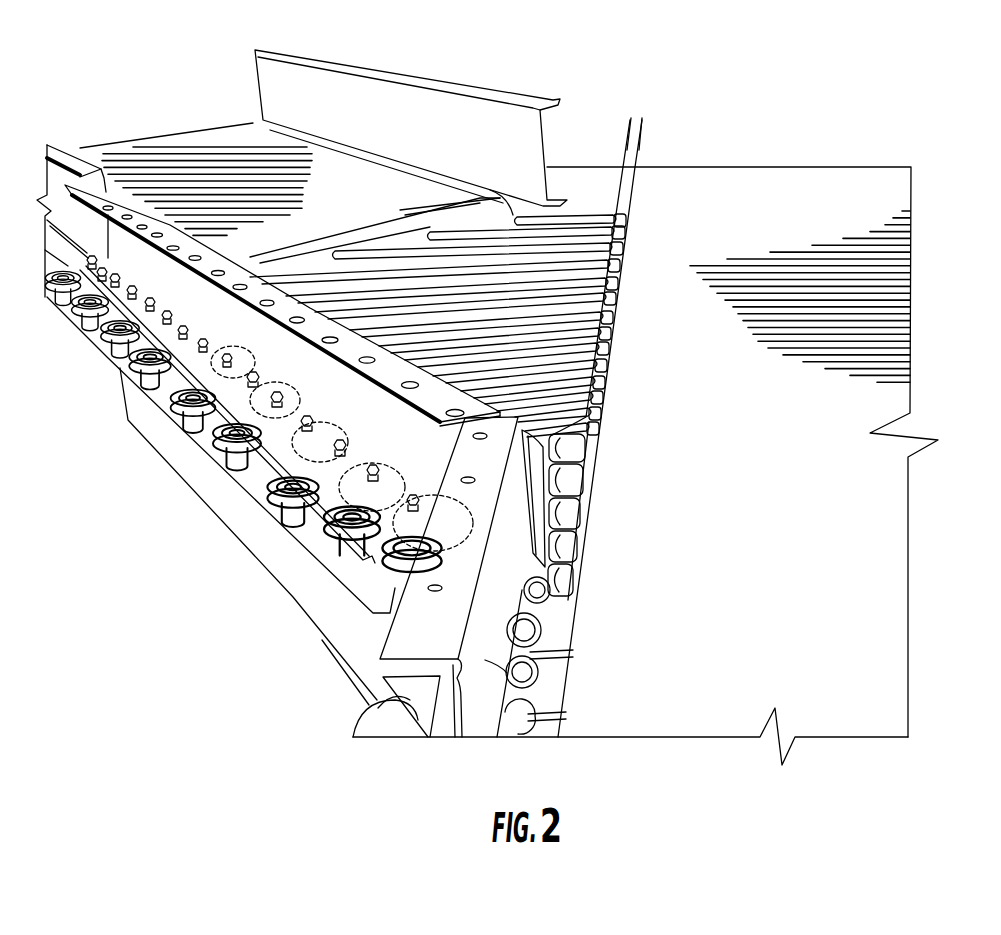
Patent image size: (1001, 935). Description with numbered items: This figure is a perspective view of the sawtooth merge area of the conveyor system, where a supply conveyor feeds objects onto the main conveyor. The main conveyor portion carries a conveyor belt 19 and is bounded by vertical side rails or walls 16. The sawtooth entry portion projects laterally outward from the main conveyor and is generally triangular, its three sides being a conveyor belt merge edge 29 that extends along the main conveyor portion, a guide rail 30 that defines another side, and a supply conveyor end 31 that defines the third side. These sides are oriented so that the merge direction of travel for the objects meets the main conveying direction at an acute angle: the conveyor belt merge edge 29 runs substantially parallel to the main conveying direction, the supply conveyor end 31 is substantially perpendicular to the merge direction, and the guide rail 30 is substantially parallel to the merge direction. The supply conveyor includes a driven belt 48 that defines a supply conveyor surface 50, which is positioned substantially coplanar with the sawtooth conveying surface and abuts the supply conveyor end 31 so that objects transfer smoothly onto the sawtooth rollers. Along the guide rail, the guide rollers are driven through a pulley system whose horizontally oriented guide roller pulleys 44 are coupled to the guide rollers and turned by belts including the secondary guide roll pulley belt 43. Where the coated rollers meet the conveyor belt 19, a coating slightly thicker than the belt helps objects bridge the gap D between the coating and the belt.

The vertical side rail 16 is at (498, 735).
The conveyor belt 19 is at (773, 200).
The conveyor belt merge edge 29 is at (620, 308).
The guide rail 30 is at (166, 230).
The supply conveyor end 31 is at (407, 230).
The secondary guide roll pulley belt 43 is at (360, 560).
The guide roller pulleys 44 is at (340, 510).
The driven belt 48 is at (252, 180).
The supply conveyor surface 50 is at (192, 142).
The gap D is at (637, 118).